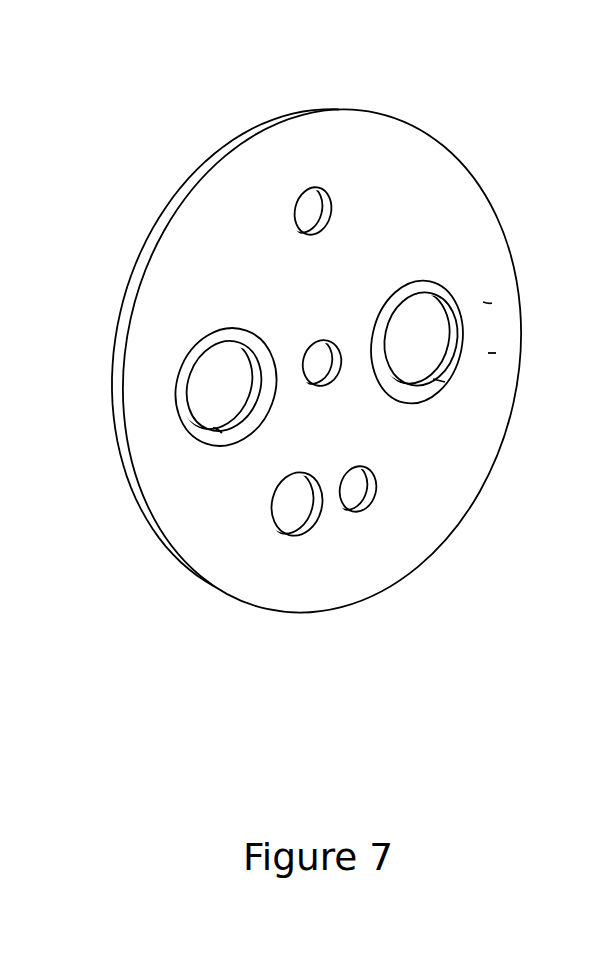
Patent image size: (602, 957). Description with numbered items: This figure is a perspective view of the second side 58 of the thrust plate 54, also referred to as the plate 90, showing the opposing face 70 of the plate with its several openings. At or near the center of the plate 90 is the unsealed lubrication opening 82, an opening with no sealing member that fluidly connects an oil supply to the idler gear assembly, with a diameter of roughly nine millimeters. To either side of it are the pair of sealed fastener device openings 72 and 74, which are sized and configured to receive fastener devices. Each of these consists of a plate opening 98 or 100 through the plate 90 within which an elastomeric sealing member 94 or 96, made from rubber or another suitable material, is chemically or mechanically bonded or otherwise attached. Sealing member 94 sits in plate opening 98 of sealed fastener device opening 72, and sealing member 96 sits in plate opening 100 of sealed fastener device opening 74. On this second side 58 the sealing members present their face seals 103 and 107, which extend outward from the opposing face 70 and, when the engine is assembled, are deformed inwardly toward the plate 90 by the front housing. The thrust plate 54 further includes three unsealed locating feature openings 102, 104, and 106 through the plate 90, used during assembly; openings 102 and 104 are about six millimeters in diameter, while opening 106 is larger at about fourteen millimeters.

The thrust plate 54 is at (453, 107).
The second side 58 is at (513, 212).
The opposing face 70 is at (483, 302).
The sealed fastener device opening 72 is at (442, 312).
The sealed fastener device opening 74 is at (195, 403).
The unsealed lubrication opening 82 is at (313, 358).
The plate 90 is at (488, 353).
The sealing member 94 is at (449, 343).
The sealing member 96 is at (193, 423).
The plate opening 98 is at (426, 359).
The plate opening 100 is at (204, 374).
The unsealed locating feature opening 102 is at (306, 208).
The face seal 103 is at (433, 379).
The unsealed locating feature opening 104 is at (357, 495).
The unsealed locating feature opening 106 is at (285, 517).
The face seal 107 is at (213, 428).